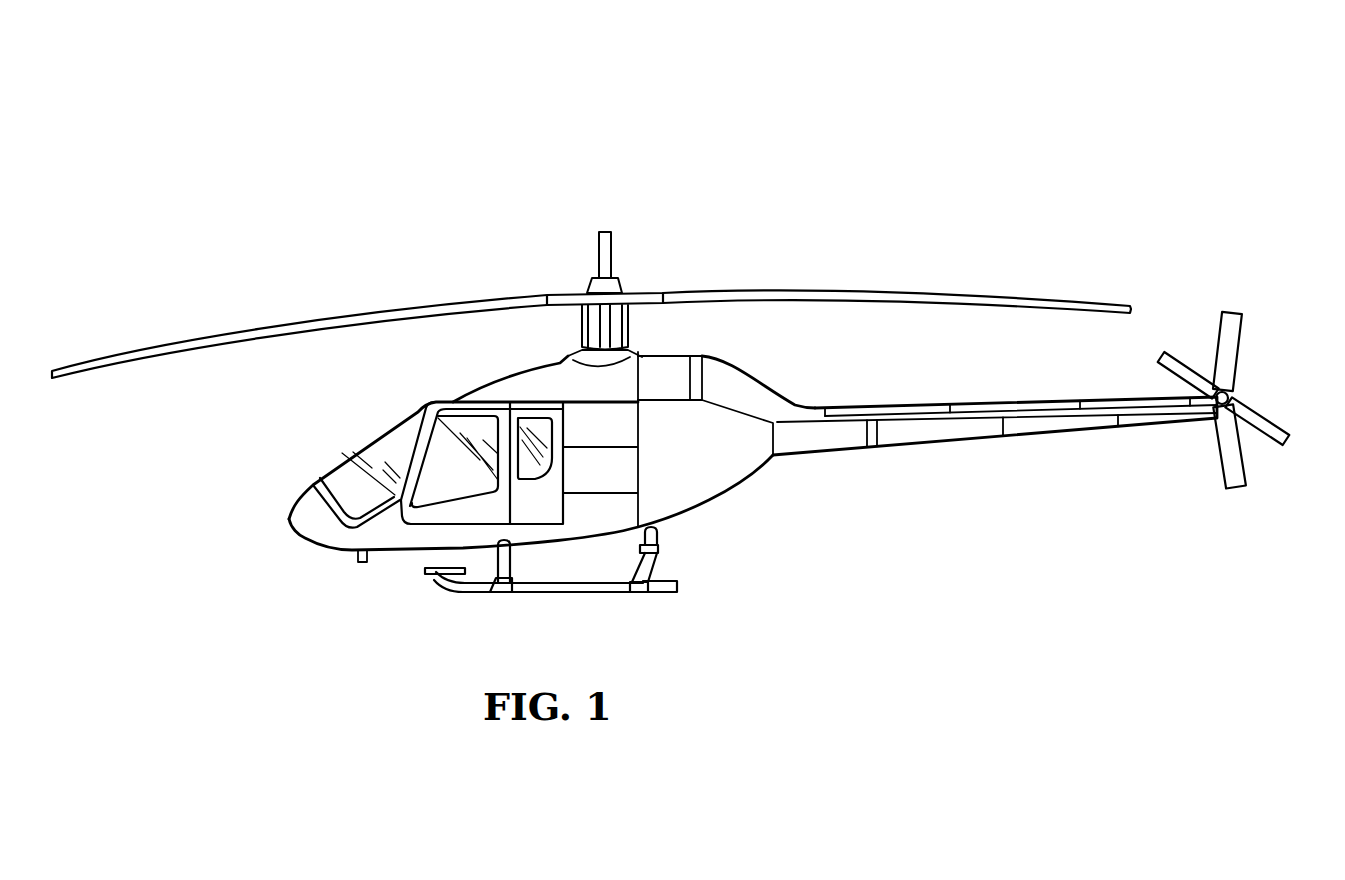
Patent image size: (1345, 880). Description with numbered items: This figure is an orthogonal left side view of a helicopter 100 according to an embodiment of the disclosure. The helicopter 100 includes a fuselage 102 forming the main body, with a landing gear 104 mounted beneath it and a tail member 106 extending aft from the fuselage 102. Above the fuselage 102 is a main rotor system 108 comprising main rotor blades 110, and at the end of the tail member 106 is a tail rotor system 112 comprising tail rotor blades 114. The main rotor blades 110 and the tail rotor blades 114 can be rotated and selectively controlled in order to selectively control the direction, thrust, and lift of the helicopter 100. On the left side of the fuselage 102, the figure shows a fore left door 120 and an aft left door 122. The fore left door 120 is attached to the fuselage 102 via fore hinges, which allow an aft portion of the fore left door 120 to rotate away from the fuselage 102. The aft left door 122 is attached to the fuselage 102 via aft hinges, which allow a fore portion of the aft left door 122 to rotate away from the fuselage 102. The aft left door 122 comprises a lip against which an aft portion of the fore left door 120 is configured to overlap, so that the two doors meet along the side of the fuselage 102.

The helicopter 100 is at (426, 84).
The fuselage 102 is at (687, 485).
The landing gear 104 is at (613, 596).
The tail member 106 is at (1053, 434).
The main rotor system 108 is at (575, 261).
The main rotor blades 110 is at (258, 325).
The tail rotor system 112 is at (1236, 386).
The tail rotor blades 114 is at (1182, 357).
The fore left door 120 is at (430, 518).
The aft left door 122 is at (537, 510).